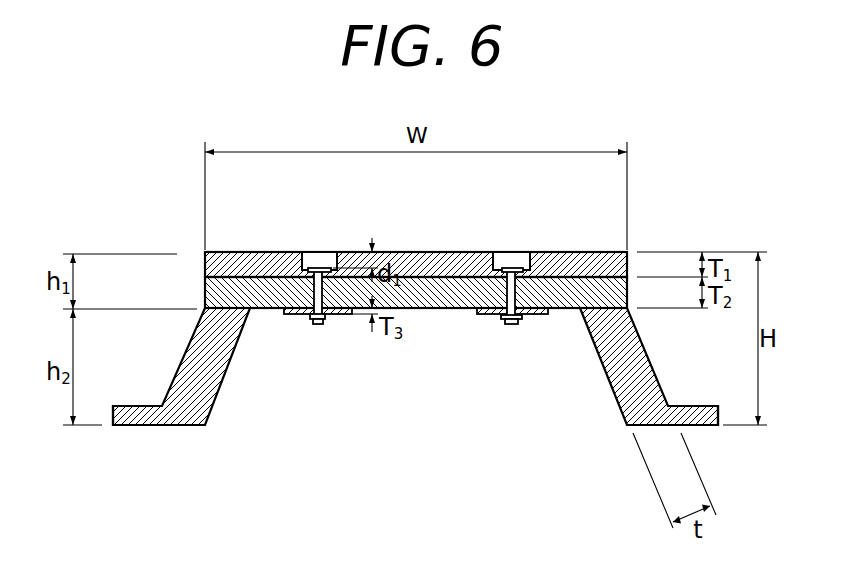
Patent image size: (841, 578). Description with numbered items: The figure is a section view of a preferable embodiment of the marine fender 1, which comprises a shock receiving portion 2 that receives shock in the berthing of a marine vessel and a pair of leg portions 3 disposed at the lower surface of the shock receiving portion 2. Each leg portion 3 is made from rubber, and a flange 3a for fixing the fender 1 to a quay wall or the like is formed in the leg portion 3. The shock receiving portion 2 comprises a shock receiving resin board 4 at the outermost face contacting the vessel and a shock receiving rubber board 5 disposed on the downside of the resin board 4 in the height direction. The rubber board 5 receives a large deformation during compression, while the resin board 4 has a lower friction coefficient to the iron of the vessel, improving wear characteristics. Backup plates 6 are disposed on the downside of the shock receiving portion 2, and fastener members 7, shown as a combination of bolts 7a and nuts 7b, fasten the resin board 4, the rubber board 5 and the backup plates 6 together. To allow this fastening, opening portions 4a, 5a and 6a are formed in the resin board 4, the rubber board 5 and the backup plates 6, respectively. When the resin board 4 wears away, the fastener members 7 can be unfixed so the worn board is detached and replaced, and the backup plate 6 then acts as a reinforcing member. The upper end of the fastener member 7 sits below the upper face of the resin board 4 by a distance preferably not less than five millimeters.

The marine fender 1 is at (582, 248).
The shock receiving portion 2 is at (382, 206).
The leg portion 3 is at (216, 407).
The flange 3a is at (150, 415).
The shock receiving resin board 4 is at (412, 266).
The opening portion 4a is at (509, 262).
The shock receiving rubber board 5 is at (443, 290).
The opening portion 5a is at (510, 292).
The backup plate 6 is at (295, 316).
The opening portion 6a is at (517, 325).
The fastener member 7 is at (383, 293).
The bolt 7a is at (314, 262).
The nut 7b is at (332, 325).